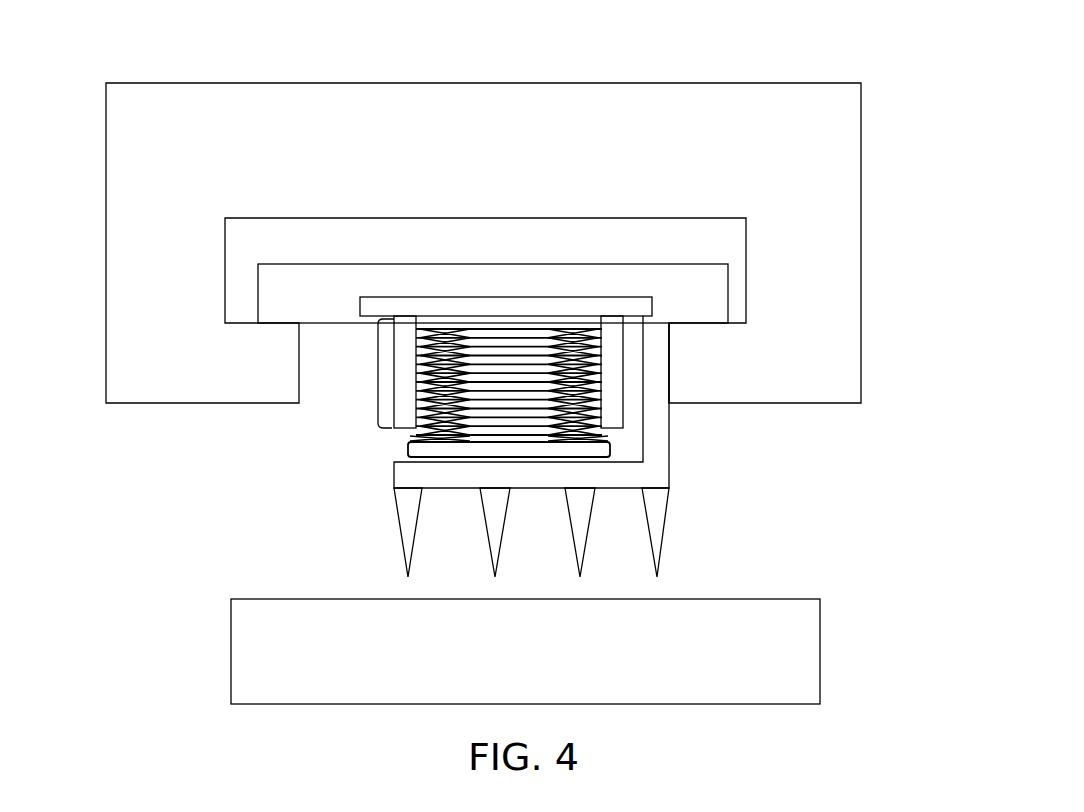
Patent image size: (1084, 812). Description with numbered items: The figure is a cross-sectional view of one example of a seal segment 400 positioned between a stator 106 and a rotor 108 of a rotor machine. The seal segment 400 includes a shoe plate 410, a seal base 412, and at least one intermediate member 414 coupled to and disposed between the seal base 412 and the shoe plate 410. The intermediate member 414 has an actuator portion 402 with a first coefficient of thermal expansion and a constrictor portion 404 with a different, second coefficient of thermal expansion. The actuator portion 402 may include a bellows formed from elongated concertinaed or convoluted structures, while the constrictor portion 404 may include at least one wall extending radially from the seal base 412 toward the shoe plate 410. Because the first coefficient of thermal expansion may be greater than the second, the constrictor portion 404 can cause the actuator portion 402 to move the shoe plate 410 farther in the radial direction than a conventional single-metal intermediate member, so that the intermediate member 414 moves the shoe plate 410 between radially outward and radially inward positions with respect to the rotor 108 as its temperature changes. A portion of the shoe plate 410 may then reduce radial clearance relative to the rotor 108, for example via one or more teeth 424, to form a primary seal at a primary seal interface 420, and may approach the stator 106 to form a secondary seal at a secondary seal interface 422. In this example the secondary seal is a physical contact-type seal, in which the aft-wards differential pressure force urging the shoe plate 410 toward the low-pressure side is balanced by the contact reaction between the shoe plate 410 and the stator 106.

The stator 106 is at (808, 83).
The rotor 108 is at (231, 655).
The seal segment 400 is at (255, 60).
The actuator portion 402 is at (600, 383).
The constrictor portion 404 is at (405, 332).
The shoe plate 410 is at (670, 478).
The seal base 412 is at (258, 283).
The intermediate member 414 is at (377, 370).
The primary seal interface 420 is at (602, 569).
The secondary seal interface 422 is at (672, 355).
The teeth 424 is at (401, 548).